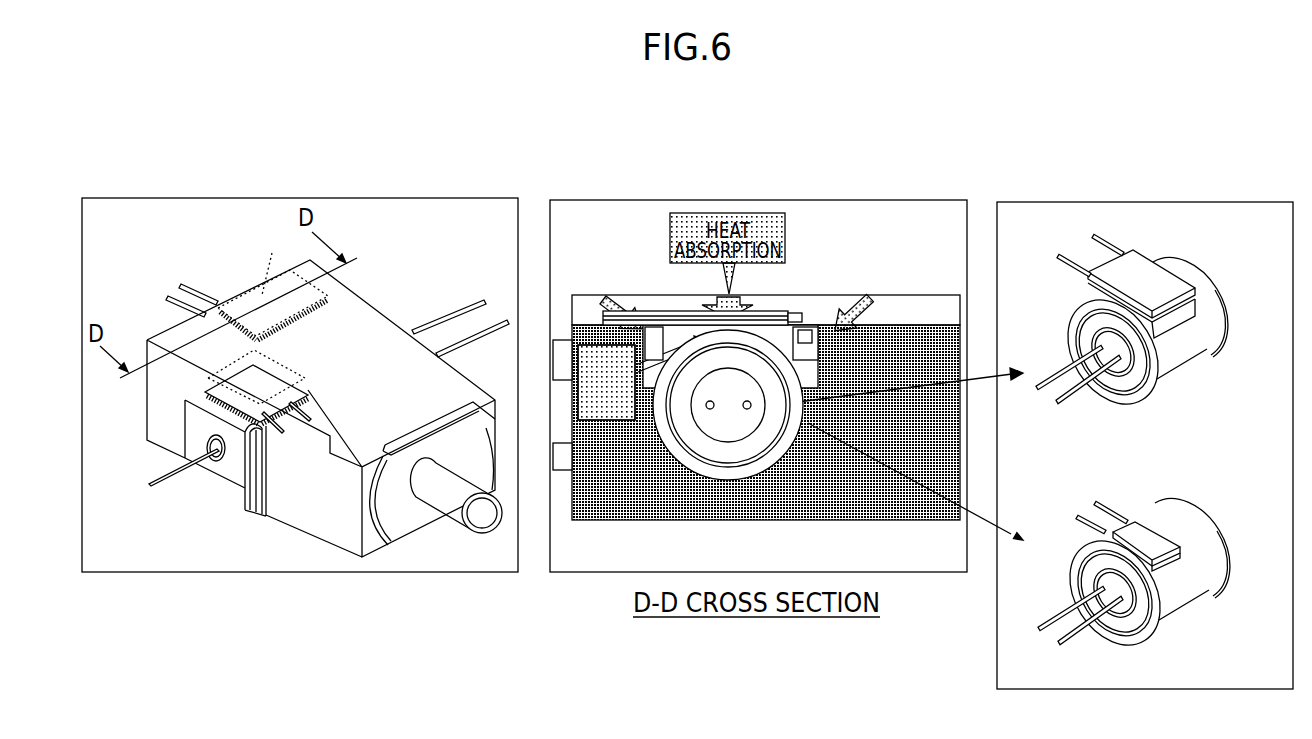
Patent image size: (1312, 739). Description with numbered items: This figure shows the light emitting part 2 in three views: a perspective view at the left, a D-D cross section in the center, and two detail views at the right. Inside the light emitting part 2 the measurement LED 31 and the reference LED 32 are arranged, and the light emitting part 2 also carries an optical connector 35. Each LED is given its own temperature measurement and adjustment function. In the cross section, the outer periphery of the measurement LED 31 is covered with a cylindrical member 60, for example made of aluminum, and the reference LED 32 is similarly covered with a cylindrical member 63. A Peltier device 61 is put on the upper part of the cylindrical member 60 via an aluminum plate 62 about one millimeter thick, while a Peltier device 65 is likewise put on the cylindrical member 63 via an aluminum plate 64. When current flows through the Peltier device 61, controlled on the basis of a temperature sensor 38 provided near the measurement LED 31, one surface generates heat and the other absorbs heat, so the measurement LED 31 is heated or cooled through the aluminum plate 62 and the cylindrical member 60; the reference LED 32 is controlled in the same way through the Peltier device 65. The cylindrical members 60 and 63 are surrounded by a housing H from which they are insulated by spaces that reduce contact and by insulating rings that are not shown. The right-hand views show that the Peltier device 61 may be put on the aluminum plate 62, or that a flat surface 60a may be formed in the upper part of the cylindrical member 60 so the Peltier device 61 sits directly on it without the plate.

The light emitting part 2 is at (392, 300).
The measurement LED 31 is at (178, 296).
The reference LED 32 is at (207, 462).
The optical connector 35 is at (452, 504).
The temperature sensor 38 is at (804, 331).
The cylindrical member 60 is at (218, 323).
The flat surface 60a is at (1175, 563).
The Peltier device 61 is at (1247, 502).
The aluminum plate 62 is at (290, 340).
The cylindrical member 63 is at (296, 425).
The aluminum plate 64 is at (254, 432).
The Peltier device 65 is at (220, 410).
The housing H is at (905, 370).